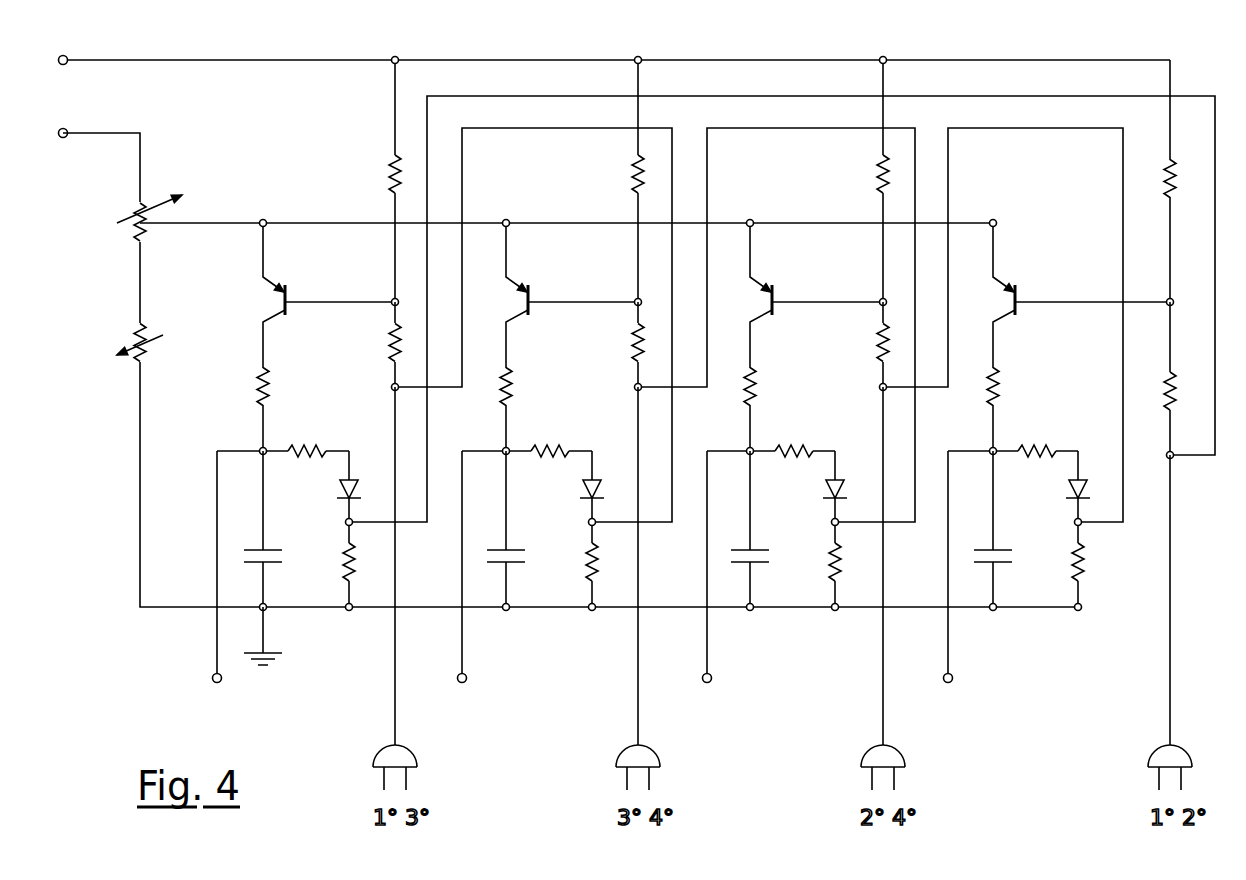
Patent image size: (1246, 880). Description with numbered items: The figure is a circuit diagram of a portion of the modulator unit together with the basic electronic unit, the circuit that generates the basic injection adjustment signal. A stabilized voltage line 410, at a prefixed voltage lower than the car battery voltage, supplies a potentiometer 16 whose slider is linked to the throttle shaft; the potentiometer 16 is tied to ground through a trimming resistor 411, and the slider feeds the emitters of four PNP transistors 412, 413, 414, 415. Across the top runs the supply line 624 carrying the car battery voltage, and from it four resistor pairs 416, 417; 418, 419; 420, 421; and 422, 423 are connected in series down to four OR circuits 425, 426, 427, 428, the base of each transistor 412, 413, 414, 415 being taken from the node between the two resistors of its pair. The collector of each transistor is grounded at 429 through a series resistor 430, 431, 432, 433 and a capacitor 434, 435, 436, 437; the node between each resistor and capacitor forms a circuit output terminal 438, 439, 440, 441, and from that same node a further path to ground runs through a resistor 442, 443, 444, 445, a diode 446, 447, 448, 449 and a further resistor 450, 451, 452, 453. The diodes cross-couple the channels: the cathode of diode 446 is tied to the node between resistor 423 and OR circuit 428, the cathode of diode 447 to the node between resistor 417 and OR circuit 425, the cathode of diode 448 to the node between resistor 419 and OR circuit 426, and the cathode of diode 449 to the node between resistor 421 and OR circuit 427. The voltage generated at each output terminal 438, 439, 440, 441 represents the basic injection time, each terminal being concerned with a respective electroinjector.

The supply bus line 624 is at (180, 60).
The stabilized voltage line 410 is at (87, 133).
The potentiometer 16 is at (132, 236).
The trimming resistor 411 is at (133, 337).
The resistor 416 is at (388, 177).
The resistor 418 is at (631, 177).
The resistor 420 is at (876, 177).
The resistor 422 is at (1166, 186).
The PNP transistor 412 is at (287, 294).
The PNP transistor 413 is at (530, 294).
The PNP transistor 414 is at (774, 294).
The PNP transistor 415 is at (1017, 294).
The resistor 417 is at (387, 349).
The resistor 419 is at (630, 349).
The resistor 421 is at (875, 349).
The resistor 423 is at (1164, 402).
The resistor 430 is at (270, 387).
The resistor 431 is at (513, 387).
The resistor 432 is at (757, 387).
The resistor 433 is at (1000, 387).
The resistor 442 is at (303, 446).
The resistor 443 is at (553, 446).
The resistor 444 is at (797, 446).
The resistor 445 is at (1036, 446).
The diode 446 is at (339, 489).
The diode 447 is at (582, 489).
The diode 448 is at (825, 489).
The diode 449 is at (1068, 489).
The capacitor 434 is at (275, 550).
The capacitor 435 is at (518, 550).
The capacitor 436 is at (762, 550).
The capacitor 437 is at (1005, 550).
The further resistor 450 is at (345, 560).
The further resistor 451 is at (588, 560).
The further resistor 452 is at (831, 560).
The further resistor 453 is at (1073, 560).
The circuit output terminal 438 is at (213, 682).
The circuit output terminal 439 is at (466, 682).
The circuit output terminal 440 is at (711, 682).
The circuit output terminal 441 is at (952, 682).
The ground 429 is at (282, 658).
The OR circuit 425 is at (415, 752).
The OR circuit 426 is at (658, 752).
The OR circuit 427 is at (903, 752).
The OR circuit 428 is at (1155, 752).